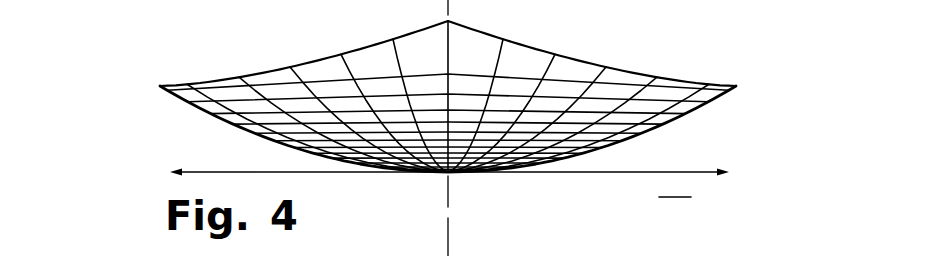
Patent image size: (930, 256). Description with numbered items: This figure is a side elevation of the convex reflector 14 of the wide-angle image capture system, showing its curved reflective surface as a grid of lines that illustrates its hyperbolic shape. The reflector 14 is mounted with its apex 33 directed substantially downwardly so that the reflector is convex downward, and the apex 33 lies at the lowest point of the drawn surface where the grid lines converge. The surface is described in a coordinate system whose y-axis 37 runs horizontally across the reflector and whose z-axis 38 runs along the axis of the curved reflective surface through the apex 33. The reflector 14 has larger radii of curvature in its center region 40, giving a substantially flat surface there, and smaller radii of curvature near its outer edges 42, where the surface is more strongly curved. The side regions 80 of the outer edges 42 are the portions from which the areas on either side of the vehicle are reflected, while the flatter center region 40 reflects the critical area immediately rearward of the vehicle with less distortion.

The convex reflector 14 is at (675, 186).
The apex 33 is at (450, 174).
The y-axis 37 is at (598, 173).
The z-axis 38 is at (449, 236).
The center region 40 is at (440, 178).
The outer edges 42 is at (183, 101).
The side regions 80 is at (197, 106).